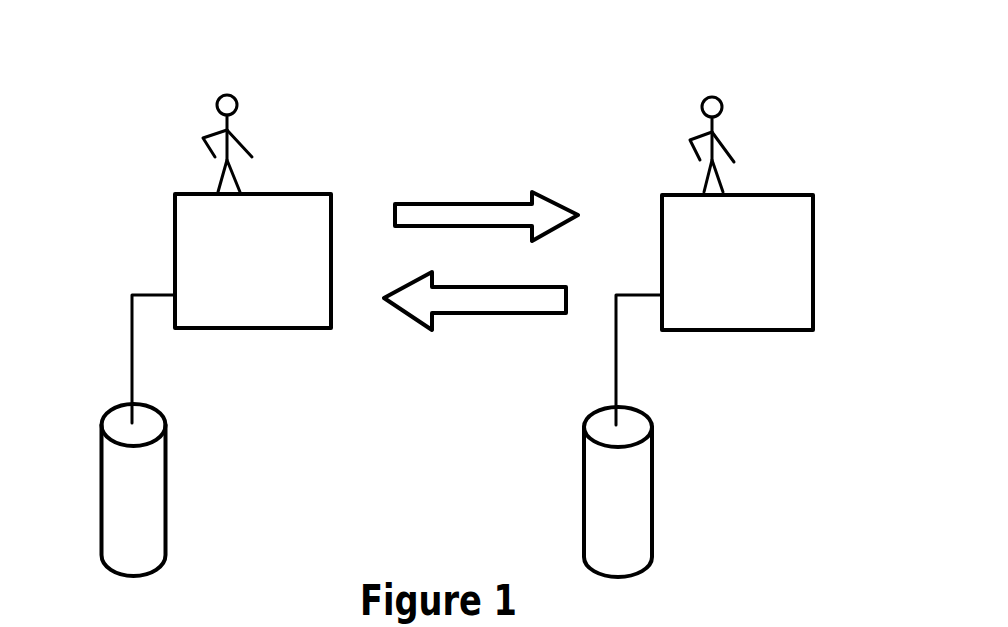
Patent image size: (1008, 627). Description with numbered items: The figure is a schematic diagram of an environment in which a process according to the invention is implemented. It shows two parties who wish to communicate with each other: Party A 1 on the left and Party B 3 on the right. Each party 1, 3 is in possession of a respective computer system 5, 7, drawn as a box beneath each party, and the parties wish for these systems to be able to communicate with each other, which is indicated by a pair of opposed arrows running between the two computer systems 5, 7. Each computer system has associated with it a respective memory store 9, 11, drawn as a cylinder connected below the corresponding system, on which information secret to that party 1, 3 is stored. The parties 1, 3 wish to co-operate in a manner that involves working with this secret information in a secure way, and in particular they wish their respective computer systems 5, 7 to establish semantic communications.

The party A 1 is at (173, 98).
The party B 3 is at (653, 102).
The computer system 5 is at (287, 208).
The computer system 7 is at (770, 210).
The memory store 9 is at (132, 488).
The memory store 11 is at (617, 490).